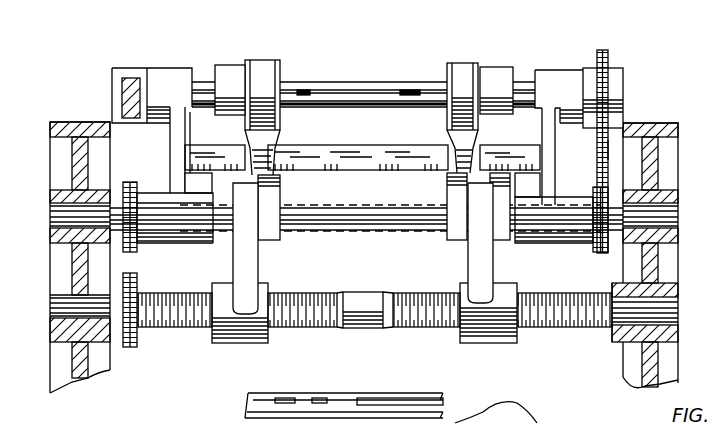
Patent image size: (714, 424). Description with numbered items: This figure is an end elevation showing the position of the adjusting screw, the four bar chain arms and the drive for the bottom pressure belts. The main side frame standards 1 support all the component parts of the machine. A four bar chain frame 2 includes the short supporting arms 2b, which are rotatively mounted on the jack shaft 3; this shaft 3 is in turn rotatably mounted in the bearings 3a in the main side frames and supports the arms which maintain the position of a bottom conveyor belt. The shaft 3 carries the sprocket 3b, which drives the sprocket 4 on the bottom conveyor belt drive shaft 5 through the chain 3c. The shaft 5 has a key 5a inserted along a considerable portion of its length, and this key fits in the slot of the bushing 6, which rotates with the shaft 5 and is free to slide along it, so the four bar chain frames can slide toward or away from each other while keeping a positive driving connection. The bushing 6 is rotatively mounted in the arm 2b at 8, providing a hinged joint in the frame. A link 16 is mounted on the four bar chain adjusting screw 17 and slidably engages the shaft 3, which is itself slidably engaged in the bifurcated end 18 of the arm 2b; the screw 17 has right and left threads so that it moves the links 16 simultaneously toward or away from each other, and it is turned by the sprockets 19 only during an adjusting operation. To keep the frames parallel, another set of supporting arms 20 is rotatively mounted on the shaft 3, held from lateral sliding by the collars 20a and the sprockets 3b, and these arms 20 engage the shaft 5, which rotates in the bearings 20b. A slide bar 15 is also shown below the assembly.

The main side frame standard 1 is at (67, 358).
The four bar chain frame 2 is at (231, 72).
The short supporting arm 2b is at (275, 146).
The jack shaft 3 is at (354, 218).
The bearing 3a is at (57, 213).
The sprocket 3b is at (140, 188).
The chain 3c is at (607, 150).
The sprocket 4 is at (610, 64).
The bottom conveyor belt drive shaft 5 is at (343, 90).
The key 5a is at (299, 89).
The bushing 6 is at (225, 122).
The mounting of bushing in arm 8 is at (458, 200).
The slide bar 15 is at (355, 406).
The link 16 is at (242, 265).
The four bar chain adjusting screw 17 is at (302, 327).
The bifurcated end 18 is at (263, 197).
The sprocket 19 is at (133, 345).
The supporting arm 20 is at (177, 90).
The collar 20a is at (197, 243).
The bearing 20b is at (158, 85).